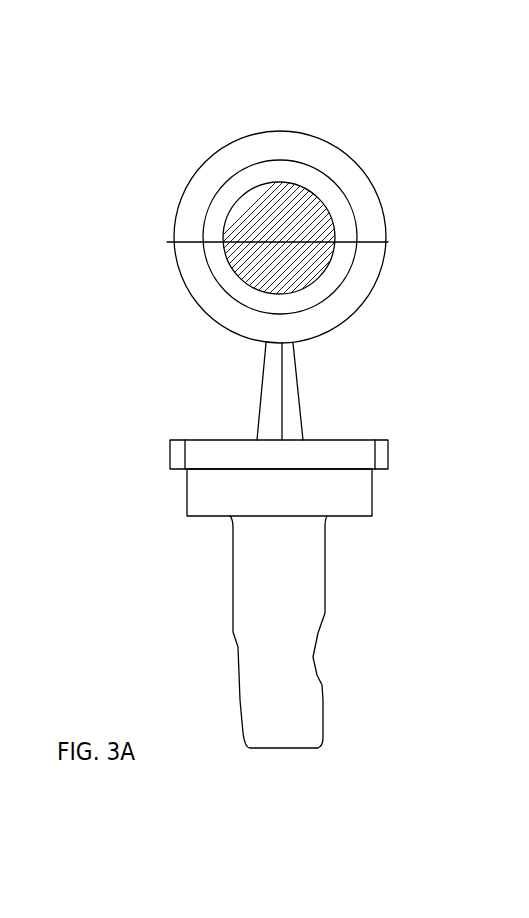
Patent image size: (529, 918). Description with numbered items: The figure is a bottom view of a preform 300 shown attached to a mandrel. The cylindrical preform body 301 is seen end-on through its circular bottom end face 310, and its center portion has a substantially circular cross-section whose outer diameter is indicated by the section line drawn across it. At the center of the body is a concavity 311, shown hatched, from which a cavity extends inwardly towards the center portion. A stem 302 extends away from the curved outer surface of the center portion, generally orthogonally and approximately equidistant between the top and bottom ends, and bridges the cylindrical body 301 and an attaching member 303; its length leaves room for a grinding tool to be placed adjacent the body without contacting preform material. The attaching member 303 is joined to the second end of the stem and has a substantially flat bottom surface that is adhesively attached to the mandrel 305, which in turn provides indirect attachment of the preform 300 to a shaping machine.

The preform 300 is at (403, 165).
The cylindrical preform body 301 is at (197, 165).
The stem 302 is at (339, 391).
The attaching member 303 is at (170, 448).
The mandrel 305 is at (232, 590).
The bottom end face 310 is at (198, 310).
The concavity 311 is at (333, 270).